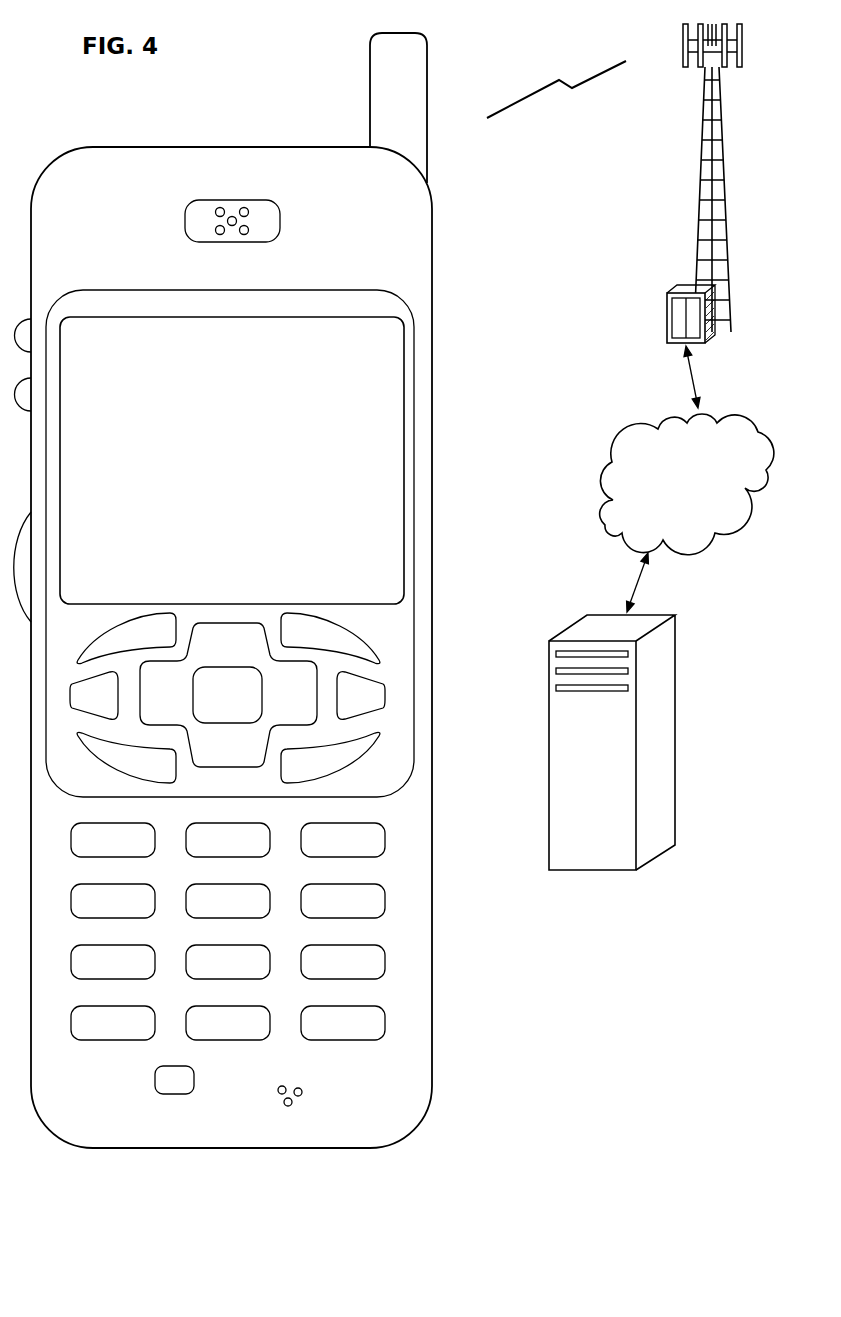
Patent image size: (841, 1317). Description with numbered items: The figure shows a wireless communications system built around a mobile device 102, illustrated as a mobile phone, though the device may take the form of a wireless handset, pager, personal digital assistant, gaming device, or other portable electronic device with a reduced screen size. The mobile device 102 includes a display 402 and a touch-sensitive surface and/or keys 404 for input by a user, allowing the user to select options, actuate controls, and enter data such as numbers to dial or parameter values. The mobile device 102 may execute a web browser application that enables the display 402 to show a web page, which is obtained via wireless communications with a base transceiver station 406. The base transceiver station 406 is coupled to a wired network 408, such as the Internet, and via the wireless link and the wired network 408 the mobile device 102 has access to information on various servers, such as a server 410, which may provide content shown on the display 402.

The mobile device 102 is at (256, 605).
The display 402 is at (408, 330).
The keys 404 is at (440, 1050).
The base transceiver station 406 is at (697, 200).
The wired network 408 is at (613, 534).
The server 410 is at (597, 870).